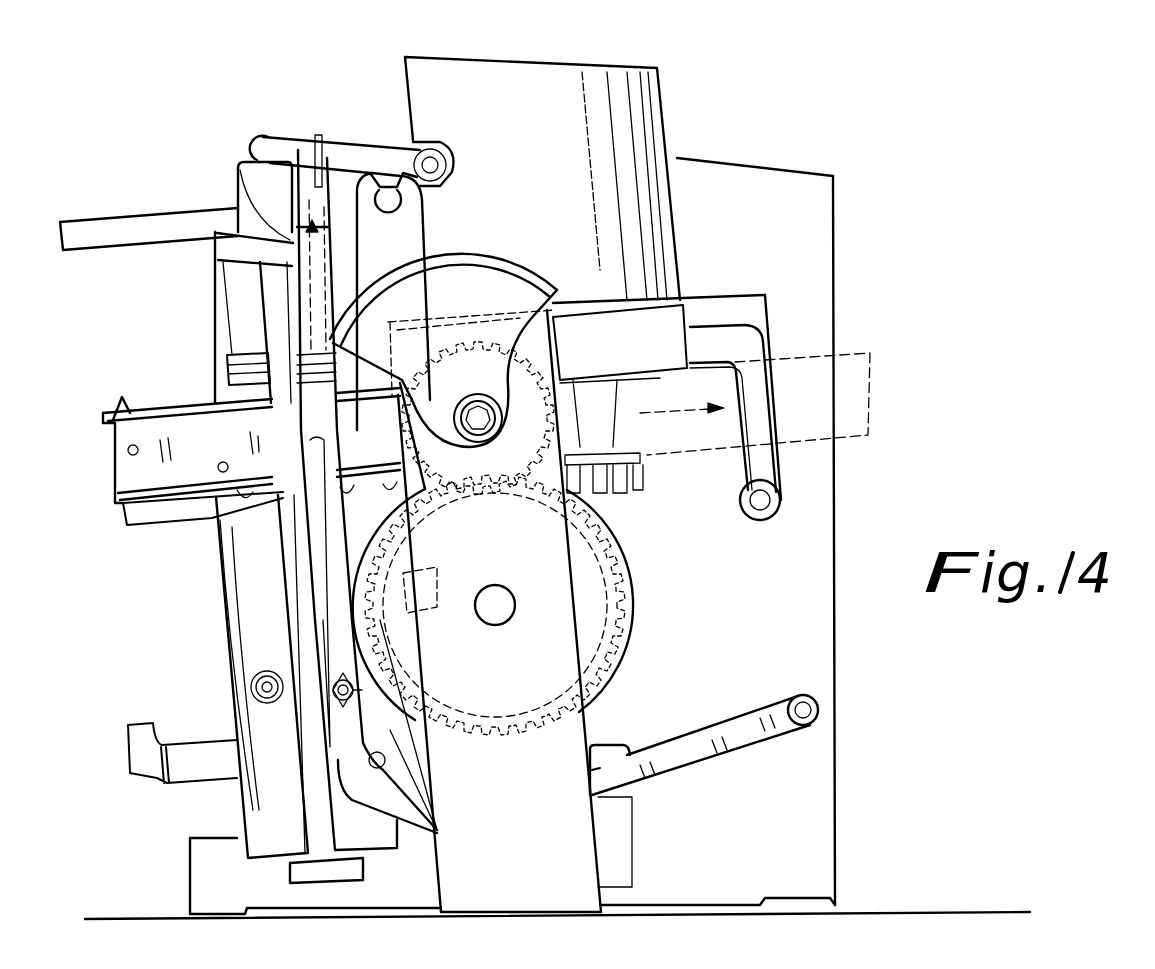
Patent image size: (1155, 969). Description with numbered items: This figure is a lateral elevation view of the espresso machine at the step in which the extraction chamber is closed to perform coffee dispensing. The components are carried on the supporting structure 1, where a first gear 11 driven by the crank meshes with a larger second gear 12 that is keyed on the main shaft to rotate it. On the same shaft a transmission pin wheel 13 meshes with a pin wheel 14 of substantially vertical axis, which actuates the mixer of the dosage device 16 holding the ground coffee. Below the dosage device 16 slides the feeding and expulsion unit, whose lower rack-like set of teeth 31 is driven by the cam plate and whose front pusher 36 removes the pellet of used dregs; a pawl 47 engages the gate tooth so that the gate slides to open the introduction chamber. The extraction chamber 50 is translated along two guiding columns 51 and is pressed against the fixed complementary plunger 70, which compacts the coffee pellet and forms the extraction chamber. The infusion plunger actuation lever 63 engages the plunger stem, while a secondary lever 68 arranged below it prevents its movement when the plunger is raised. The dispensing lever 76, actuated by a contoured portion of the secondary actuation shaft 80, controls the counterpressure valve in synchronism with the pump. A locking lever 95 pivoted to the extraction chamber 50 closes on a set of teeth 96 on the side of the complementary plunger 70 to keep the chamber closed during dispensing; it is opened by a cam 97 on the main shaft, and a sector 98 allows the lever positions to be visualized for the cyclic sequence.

The supporting structure 1 is at (560, 762).
The first gear 11 is at (520, 367).
The second gear 12 is at (583, 587).
The transmission pin wheel 13 is at (613, 530).
The pin wheel 14 is at (640, 473).
The dosage device 16 is at (623, 230).
The rack-like set of teeth 31 is at (242, 495).
The pusher 36 is at (115, 463).
The pawl 47 is at (715, 470).
The extraction chamber 50 is at (215, 647).
The guiding columns 51 is at (307, 787).
The infusion plunger actuation lever 63 is at (686, 757).
The secondary lever 68 is at (633, 742).
The complementary plunger 70 is at (228, 356).
The dispensing lever 76 is at (340, 137).
The secondary actuation shaft 80 is at (402, 204).
The locking lever 95 is at (347, 715).
The set of teeth 96 is at (244, 176).
The cam of the closure lever 97 is at (433, 583).
The sector 98 is at (483, 273).